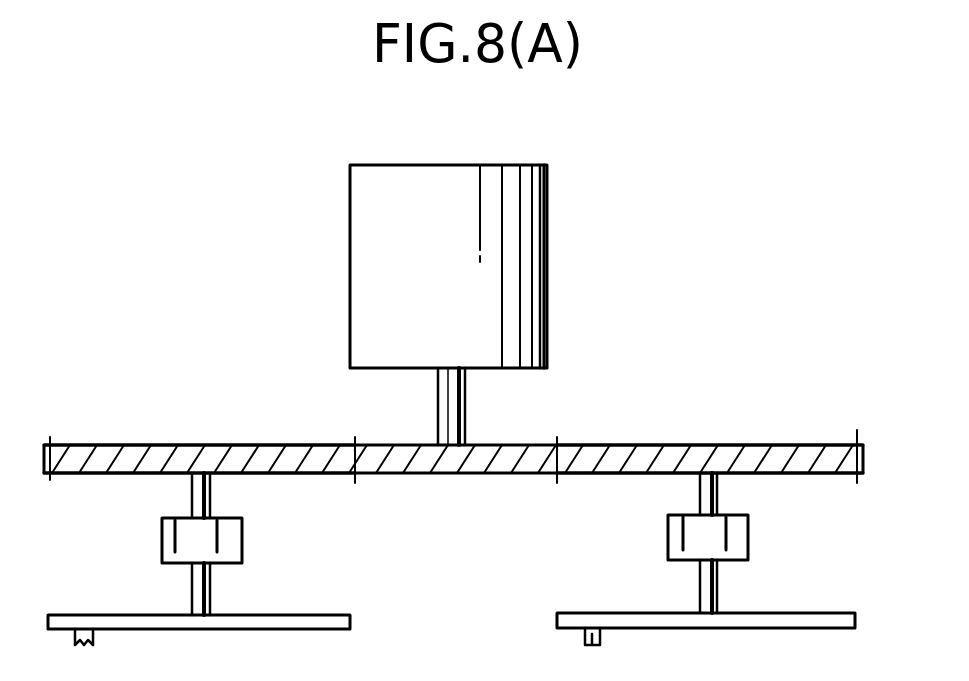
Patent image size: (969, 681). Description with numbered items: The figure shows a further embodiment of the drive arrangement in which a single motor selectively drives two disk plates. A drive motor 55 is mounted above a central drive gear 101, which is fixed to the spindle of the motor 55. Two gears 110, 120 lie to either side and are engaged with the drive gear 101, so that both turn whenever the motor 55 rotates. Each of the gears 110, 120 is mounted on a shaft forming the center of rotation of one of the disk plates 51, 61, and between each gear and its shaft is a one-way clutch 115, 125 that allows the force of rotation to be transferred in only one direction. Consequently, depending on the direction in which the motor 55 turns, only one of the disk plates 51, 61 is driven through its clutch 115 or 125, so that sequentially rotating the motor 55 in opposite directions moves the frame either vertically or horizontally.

The drive motor 55 is at (547, 228).
The drive gear 101 is at (457, 473).
The gear 110 is at (258, 473).
The gear 120 is at (617, 473).
The one-way clutch 115 is at (242, 533).
The one-way clutch 125 is at (748, 530).
The disk plate 51 is at (295, 630).
The disk plate 61 is at (833, 628).